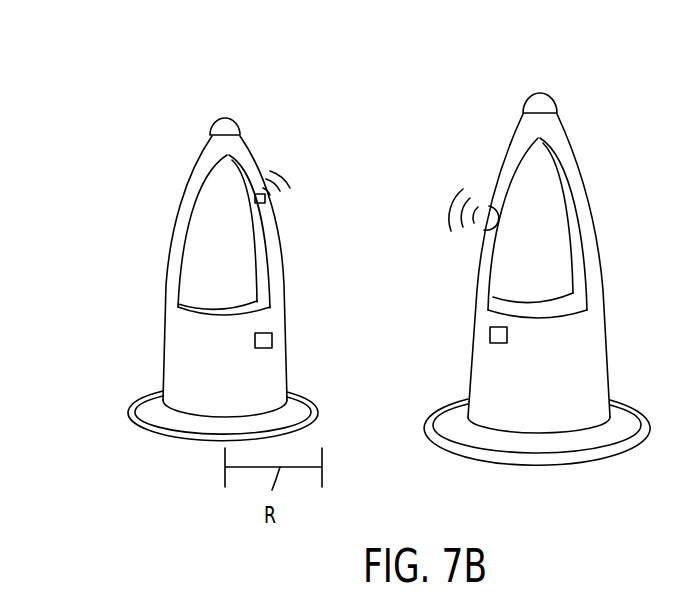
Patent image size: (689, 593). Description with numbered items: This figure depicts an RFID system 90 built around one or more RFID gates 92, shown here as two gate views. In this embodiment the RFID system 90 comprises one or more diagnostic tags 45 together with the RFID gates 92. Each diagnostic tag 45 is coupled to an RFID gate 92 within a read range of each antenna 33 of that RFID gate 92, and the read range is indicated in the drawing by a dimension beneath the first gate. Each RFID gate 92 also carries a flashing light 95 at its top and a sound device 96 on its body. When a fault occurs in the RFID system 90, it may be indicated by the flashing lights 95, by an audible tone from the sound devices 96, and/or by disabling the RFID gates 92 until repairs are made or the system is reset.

The RFID system 90 is at (111, 109).
The RFID gate 92 is at (293, 149).
The antenna 33 is at (182, 203).
The flashing light 95 is at (240, 122).
The sound device 96 is at (265, 202).
The diagnostic tag 45 is at (272, 340).